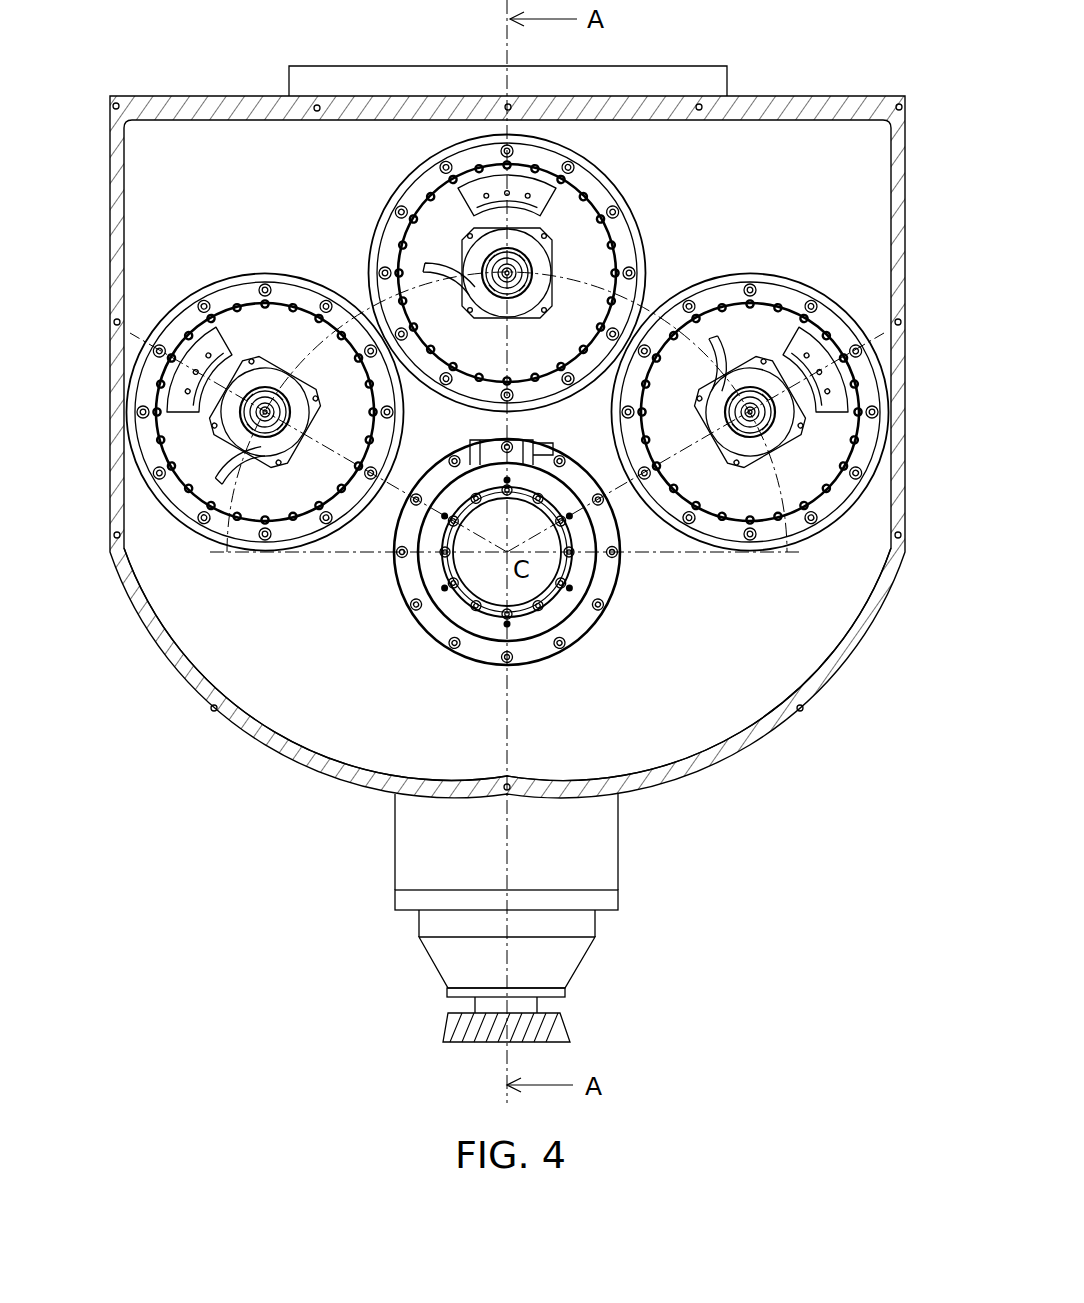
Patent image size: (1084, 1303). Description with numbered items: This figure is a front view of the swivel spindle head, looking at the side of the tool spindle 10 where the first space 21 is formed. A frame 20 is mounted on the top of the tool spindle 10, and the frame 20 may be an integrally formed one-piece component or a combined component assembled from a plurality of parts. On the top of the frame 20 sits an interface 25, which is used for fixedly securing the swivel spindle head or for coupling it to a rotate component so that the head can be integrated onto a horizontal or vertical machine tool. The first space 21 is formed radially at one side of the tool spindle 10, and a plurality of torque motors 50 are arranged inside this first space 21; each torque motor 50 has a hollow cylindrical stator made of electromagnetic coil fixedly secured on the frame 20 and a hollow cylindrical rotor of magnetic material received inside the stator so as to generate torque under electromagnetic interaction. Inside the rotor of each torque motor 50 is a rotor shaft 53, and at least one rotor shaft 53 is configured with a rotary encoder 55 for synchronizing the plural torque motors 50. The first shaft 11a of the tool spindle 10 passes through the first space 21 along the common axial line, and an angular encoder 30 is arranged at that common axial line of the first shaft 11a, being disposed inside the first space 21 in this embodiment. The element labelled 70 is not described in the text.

The tool spindle 10 is at (438, 966).
The first shaft 11a is at (482, 565).
The frame 20 is at (197, 97).
The first space 21 is at (722, 698).
The interface 25 is at (397, 72).
The angular encoder 30 is at (495, 448).
The torque motor 50 is at (377, 180).
The rotor shaft 53 is at (520, 256).
The rotary encoder 55 is at (540, 262).
The driving motor coupling 70 is at (455, 1026).